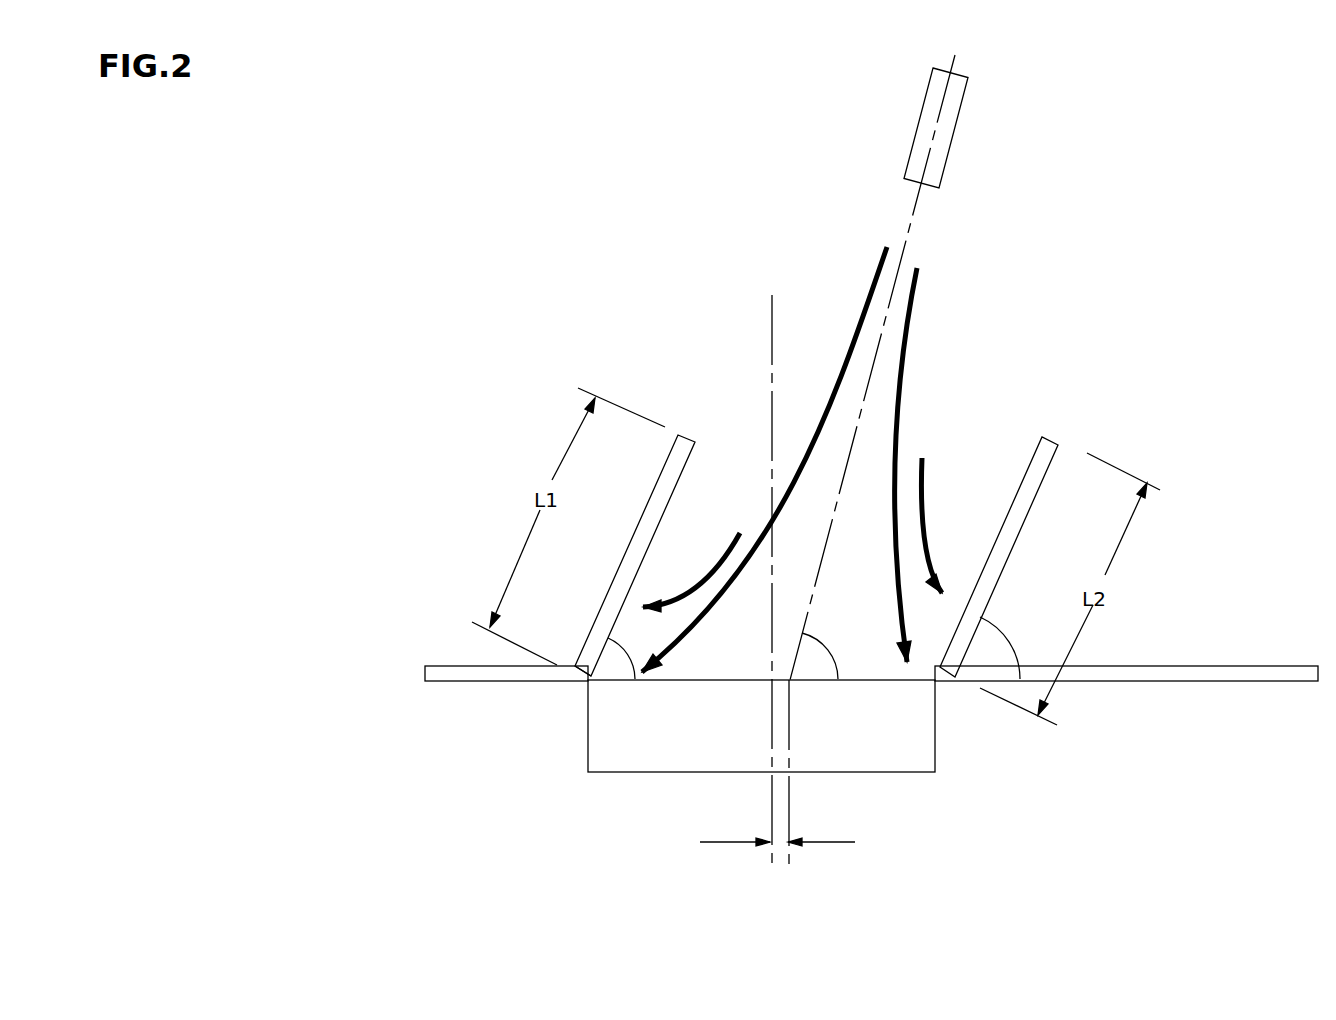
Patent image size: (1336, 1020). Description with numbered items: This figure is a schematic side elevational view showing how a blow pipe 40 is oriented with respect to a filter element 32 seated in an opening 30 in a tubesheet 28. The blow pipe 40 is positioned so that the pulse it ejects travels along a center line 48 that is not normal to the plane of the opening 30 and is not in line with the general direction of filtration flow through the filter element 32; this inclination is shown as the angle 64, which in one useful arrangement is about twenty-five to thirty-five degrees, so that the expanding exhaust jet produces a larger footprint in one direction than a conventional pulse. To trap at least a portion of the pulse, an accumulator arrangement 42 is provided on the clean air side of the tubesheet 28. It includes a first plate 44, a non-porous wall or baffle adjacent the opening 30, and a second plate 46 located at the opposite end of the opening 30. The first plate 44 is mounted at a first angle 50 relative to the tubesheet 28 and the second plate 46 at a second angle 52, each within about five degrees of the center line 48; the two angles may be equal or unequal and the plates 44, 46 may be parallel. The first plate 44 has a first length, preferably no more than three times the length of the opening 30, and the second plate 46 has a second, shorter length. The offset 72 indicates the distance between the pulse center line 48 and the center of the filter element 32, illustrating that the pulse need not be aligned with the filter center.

The tubesheet 28 is at (458, 663).
The opening 30 is at (590, 683).
The filter element 32 is at (935, 750).
The blow pipe 40 is at (955, 135).
The accumulator arrangement 42 is at (683, 398).
The first plate 44 is at (645, 508).
The second plate 46 is at (1043, 480).
The center line 48 is at (857, 435).
The first angle 50 is at (617, 638).
The second angle 52 is at (998, 617).
The angle 64 is at (820, 638).
The offset 72 is at (792, 844).